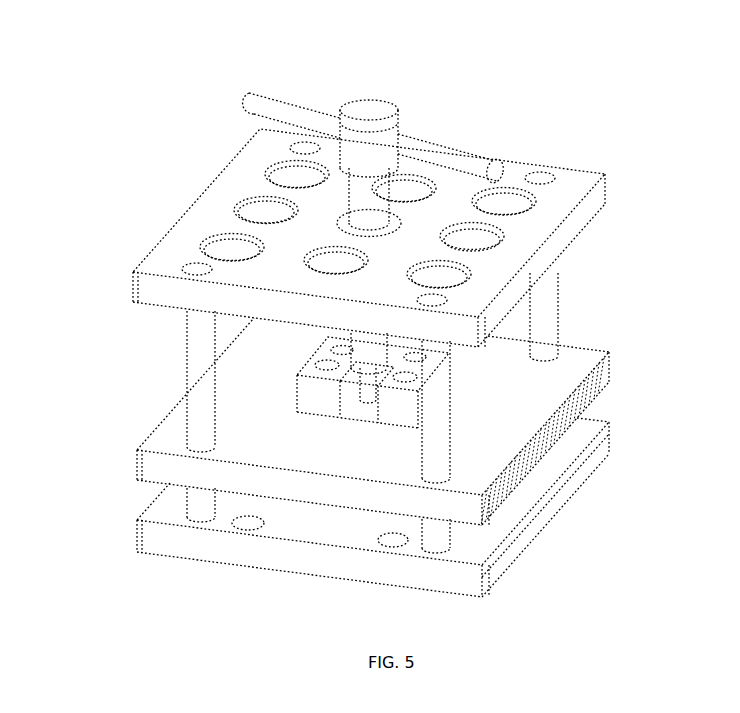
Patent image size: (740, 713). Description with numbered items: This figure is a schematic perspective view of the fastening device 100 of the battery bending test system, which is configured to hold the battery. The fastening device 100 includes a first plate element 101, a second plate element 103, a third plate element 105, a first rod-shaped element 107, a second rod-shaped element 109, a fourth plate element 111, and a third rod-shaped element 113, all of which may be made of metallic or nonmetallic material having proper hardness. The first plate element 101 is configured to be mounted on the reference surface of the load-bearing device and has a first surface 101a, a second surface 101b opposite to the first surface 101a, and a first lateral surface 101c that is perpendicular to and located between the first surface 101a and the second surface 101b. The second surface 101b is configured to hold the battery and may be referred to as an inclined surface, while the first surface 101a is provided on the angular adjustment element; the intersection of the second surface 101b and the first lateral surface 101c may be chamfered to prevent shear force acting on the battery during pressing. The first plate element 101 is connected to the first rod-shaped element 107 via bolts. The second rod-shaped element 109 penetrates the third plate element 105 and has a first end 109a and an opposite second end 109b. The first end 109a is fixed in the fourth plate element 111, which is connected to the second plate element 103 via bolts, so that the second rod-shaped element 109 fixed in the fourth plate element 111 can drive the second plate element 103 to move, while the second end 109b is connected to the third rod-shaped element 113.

The fastening device 100 is at (421, 35).
The first plate element 101 is at (394, 528).
The first surface 101a is at (313, 568).
The second surface 101b is at (528, 485).
The first lateral surface 101c is at (518, 552).
The second plate element 103 is at (158, 467).
The third plate element 105 is at (148, 293).
The first rod-shaped element 107 is at (539, 326).
The second rod-shaped element 109 is at (379, 274).
The first end 109a is at (362, 392).
The second end 109b is at (382, 196).
The fourth plate element 111 is at (322, 387).
The third rod-shaped element 113 is at (460, 160).